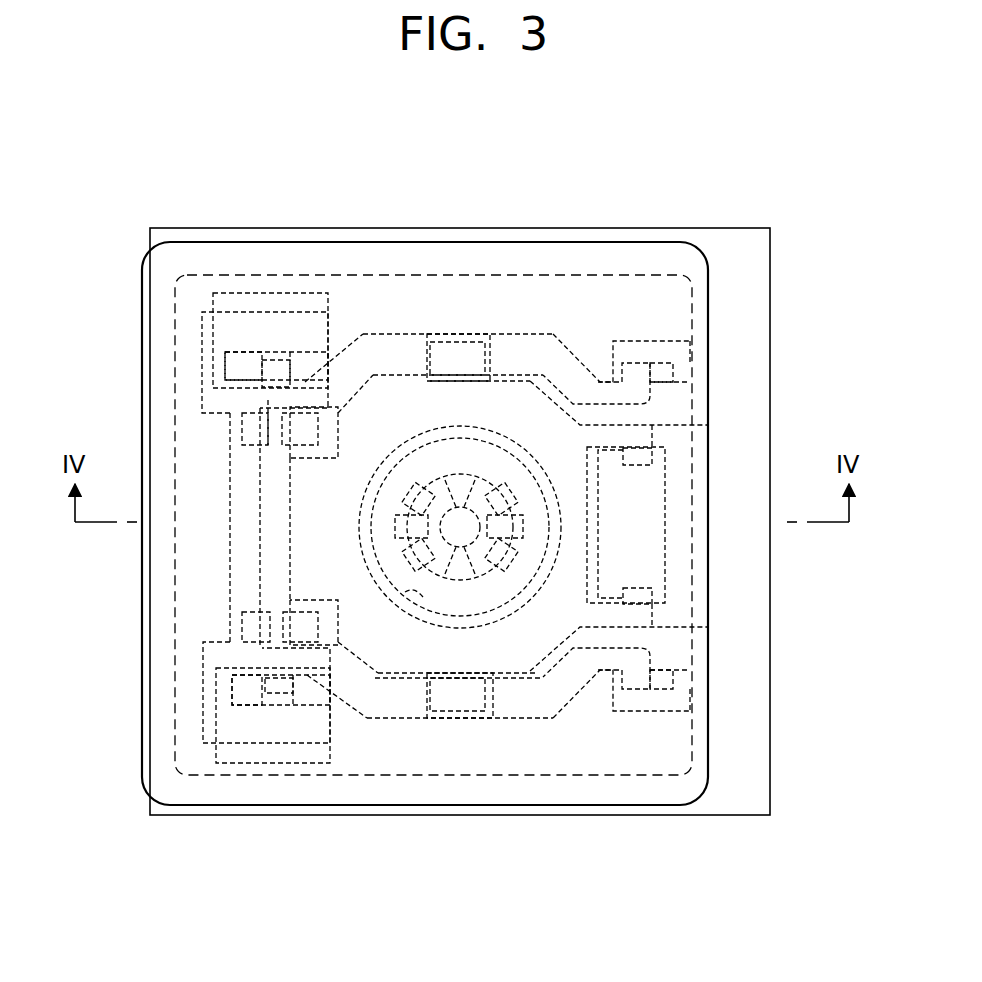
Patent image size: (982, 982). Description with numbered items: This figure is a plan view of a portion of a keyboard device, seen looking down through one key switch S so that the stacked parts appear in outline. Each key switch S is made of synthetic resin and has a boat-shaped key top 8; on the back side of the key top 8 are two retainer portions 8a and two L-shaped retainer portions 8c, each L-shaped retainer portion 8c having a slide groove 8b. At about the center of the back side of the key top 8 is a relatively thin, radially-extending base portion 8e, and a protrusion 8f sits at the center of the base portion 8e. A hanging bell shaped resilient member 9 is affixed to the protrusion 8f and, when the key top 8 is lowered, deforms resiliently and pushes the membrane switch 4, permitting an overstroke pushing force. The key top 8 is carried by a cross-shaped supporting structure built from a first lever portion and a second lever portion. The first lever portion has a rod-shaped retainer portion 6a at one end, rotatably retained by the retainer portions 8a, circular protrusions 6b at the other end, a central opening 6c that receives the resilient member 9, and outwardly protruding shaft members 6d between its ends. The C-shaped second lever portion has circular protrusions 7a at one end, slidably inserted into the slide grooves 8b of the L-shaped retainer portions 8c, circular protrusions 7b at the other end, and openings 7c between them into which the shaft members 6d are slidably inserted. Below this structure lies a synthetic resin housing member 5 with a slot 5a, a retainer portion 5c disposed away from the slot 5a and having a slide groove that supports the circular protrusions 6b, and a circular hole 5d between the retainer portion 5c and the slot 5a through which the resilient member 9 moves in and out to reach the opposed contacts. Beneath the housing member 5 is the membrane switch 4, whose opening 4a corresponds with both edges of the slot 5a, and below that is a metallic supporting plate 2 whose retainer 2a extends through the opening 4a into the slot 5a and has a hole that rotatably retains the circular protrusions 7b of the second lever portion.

The supporting plate 2 is at (505, 494).
The membrane switch 4 is at (505, 494).
The housing member 5 is at (746, 264).
The key top 8 is at (668, 262).
The key switch S is at (160, 838).
The retainer 2a is at (223, 363).
The opening 4a is at (230, 292).
The slot 5a is at (245, 597).
The retainer portion 5c is at (645, 513).
The circular hole 5d is at (423, 595).
The rod-shaped retainer portion 6a is at (280, 555).
The circular protrusions 6b is at (640, 450).
The opening 6c is at (505, 435).
The shaft members 6d is at (460, 352).
The circular protrusions 7a is at (637, 362).
The circular protrusions 7b is at (275, 365).
The openings 7c is at (427, 334).
The retainer portions 8a is at (248, 438).
The slide groove 8b is at (670, 372).
The L-shaped retainer portions 8c is at (692, 347).
The base portion 8e is at (495, 477).
The protrusion 8f is at (455, 550).
The resilient member 9 is at (375, 498).